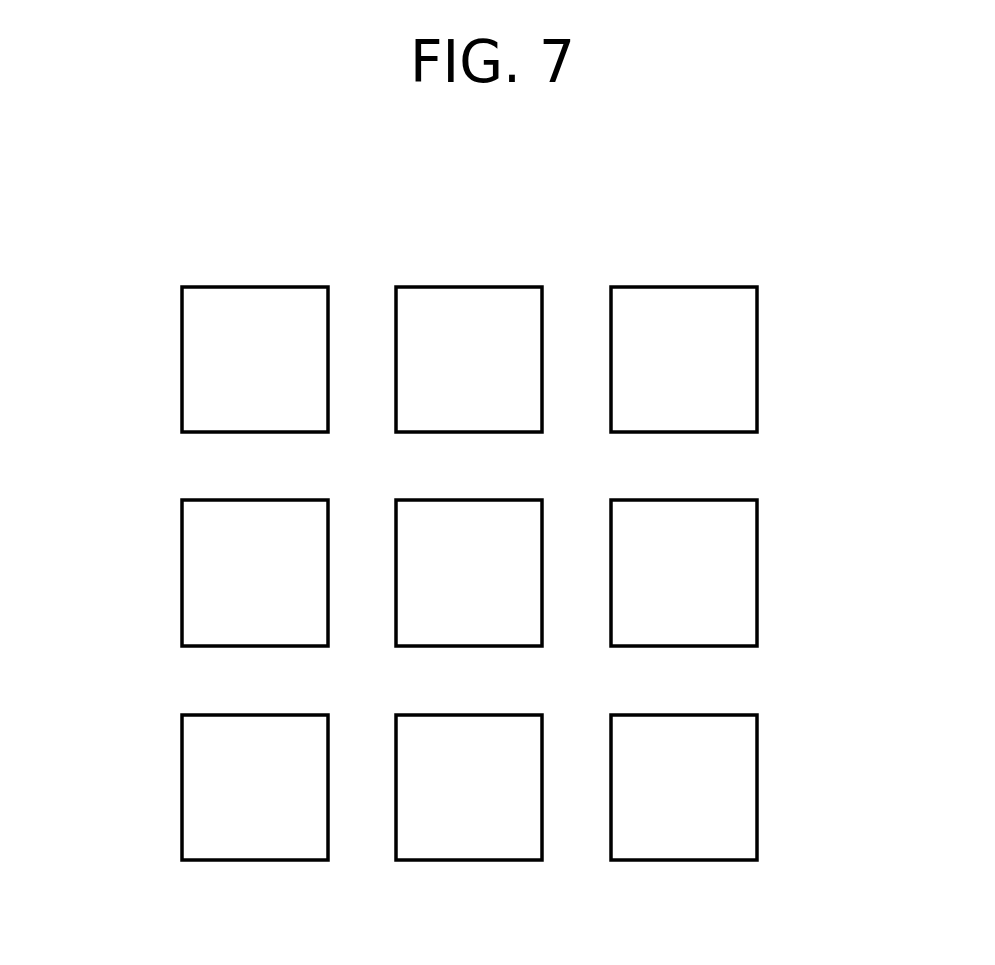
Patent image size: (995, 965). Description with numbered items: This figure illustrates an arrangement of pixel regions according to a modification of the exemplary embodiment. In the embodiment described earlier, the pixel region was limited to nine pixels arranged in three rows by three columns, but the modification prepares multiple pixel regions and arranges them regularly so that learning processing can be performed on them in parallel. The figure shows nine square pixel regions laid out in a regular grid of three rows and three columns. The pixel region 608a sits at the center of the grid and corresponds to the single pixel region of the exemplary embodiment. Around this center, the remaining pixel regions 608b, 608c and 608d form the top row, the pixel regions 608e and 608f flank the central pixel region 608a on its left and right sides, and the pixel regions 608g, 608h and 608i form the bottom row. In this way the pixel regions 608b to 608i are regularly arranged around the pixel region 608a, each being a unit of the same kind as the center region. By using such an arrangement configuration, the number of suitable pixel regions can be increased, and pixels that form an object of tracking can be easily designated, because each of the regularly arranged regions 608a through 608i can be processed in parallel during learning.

The pixel region 608a is at (542, 500).
The pixel region 608b is at (253, 287).
The pixel region 608c is at (472, 287).
The pixel region 608d is at (708, 287).
The pixel region 608e is at (182, 548).
The pixel region 608f is at (758, 573).
The pixel region 608g is at (258, 860).
The pixel region 608h is at (470, 860).
The pixel region 608i is at (693, 860).